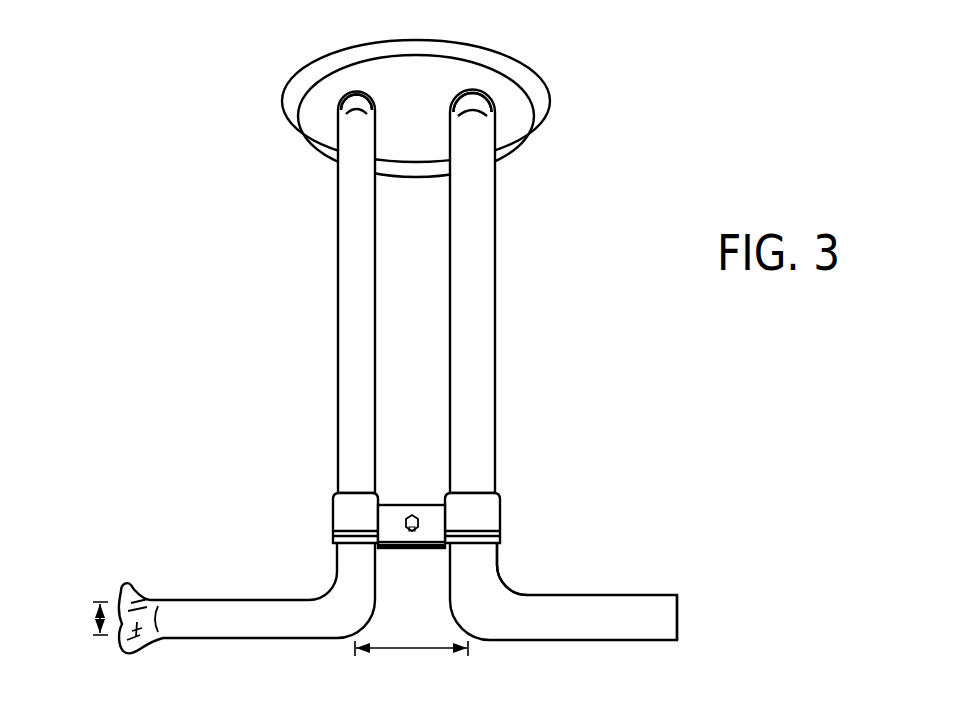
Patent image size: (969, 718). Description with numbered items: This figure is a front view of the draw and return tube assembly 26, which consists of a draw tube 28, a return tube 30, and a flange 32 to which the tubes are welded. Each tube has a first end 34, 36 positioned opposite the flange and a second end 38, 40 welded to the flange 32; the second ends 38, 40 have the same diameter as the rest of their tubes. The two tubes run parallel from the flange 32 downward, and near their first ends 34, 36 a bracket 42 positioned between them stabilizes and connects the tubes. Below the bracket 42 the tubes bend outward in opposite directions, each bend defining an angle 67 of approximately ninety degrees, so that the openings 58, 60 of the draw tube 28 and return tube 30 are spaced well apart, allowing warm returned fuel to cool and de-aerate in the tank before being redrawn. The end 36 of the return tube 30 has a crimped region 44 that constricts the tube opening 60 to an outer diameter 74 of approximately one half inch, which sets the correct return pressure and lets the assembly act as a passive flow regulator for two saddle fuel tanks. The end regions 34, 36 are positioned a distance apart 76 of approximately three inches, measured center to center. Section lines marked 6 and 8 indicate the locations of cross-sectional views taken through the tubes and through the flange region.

The draw and return tube assembly 26 is at (400, 356).
The draw tube 28 is at (477, 385).
The return tube 30 is at (348, 303).
The flange 32 is at (450, 67).
The first end of draw tube 34 is at (640, 608).
The first end of return tube 36 is at (228, 608).
The second end of draw tube 38 is at (483, 128).
The second end of return tube 40 is at (350, 125).
The bracket 42 is at (427, 530).
The crimped region 44 is at (133, 643).
The opening of draw tube 58 is at (688, 612).
The opening of return tube 60 is at (110, 621).
The angle 67 is at (496, 553).
The outer diameter of crimped region 74 is at (98, 618).
The distance apart 76 is at (398, 650).
The section line 6- 6 is at (455, 217).
The section line 8- 8 is at (275, 112).